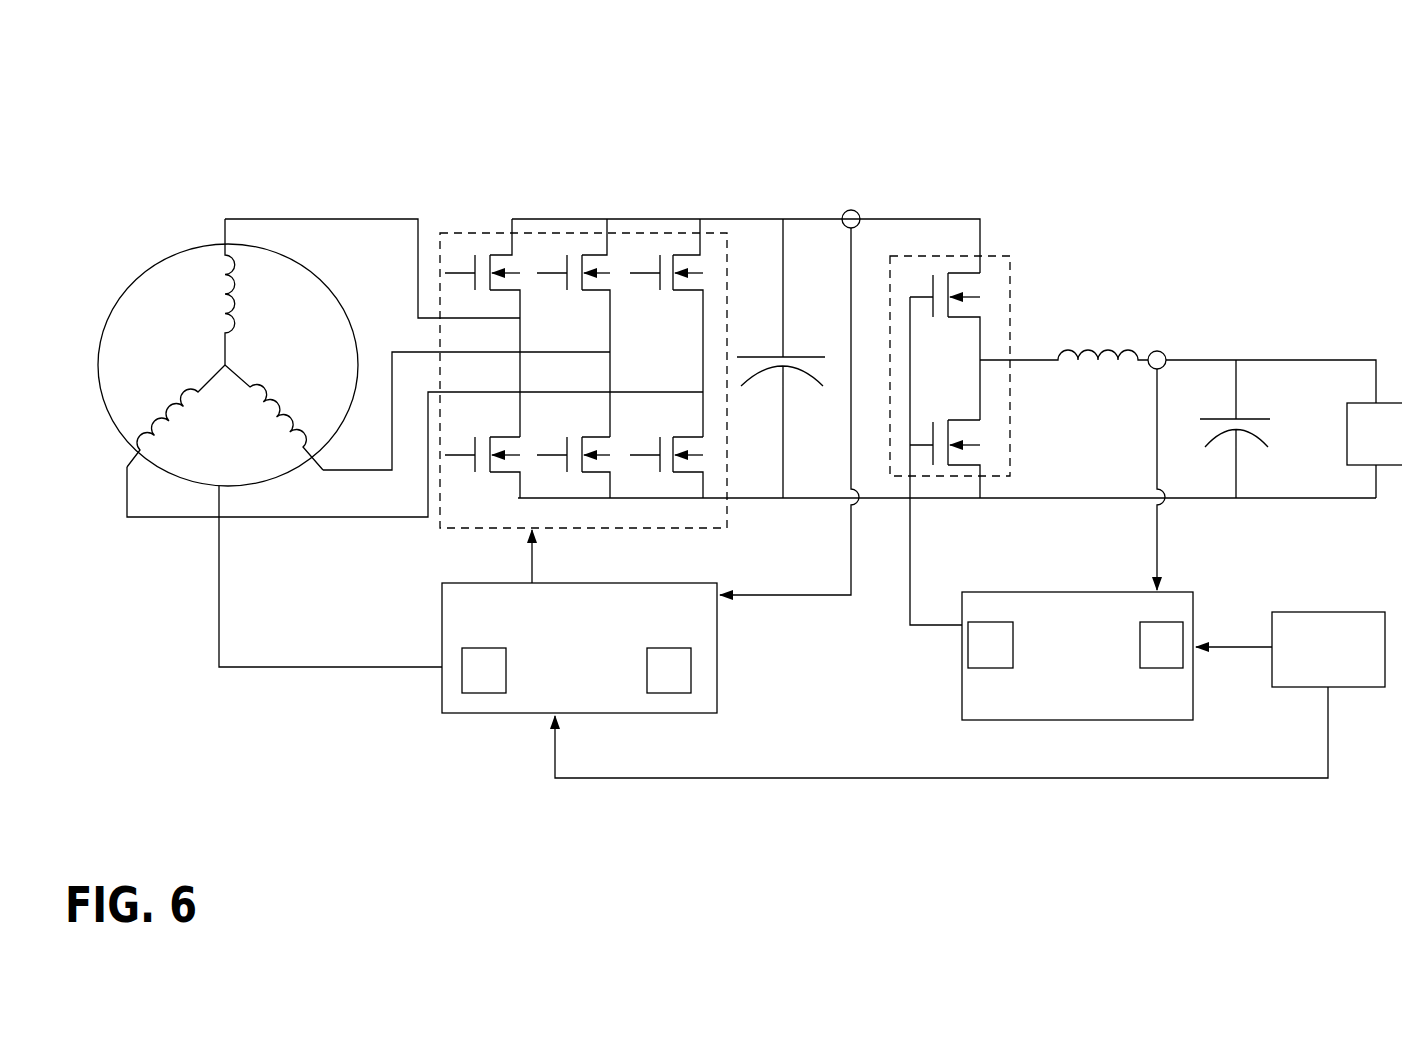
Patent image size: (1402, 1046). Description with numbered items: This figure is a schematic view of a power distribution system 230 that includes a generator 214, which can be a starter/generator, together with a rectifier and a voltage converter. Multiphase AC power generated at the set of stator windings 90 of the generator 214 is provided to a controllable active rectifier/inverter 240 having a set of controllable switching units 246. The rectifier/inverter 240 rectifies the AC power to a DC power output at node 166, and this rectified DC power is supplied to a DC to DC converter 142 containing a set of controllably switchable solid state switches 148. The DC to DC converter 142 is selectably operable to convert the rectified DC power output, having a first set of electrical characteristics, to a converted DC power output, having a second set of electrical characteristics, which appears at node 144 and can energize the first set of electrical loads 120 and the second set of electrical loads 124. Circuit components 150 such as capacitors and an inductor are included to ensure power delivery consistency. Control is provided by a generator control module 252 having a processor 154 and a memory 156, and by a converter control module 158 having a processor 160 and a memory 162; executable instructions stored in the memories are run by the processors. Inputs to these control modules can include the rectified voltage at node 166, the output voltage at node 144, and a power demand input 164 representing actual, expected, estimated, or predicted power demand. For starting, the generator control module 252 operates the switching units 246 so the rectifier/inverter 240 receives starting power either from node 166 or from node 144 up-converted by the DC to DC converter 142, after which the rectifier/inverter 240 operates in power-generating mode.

The power distribution system 230 is at (773, 33).
The generator 214 is at (108, 268).
The set of stator windings 90 is at (160, 363).
The controllable active rectifier/inverter 240 is at (573, 218).
The controllable switching units 246 is at (627, 246).
The circuit components 150 is at (798, 337).
The node 166 is at (852, 206).
The DC to DC converter 142 is at (926, 254).
The switches 148 is at (989, 436).
The node 144 is at (1161, 347).
The first set of electrical loads 120 is at (1374, 434).
The second set of electrical loads 124 is at (1374, 434).
The generator control module 252 is at (600, 698).
The processor 154 is at (502, 688).
The memory 156 is at (687, 688).
The converter control module 158 is at (1162, 708).
The processor 160 is at (1008, 663).
The memory 162 is at (1180, 663).
The power demand input 164 is at (1329, 612).